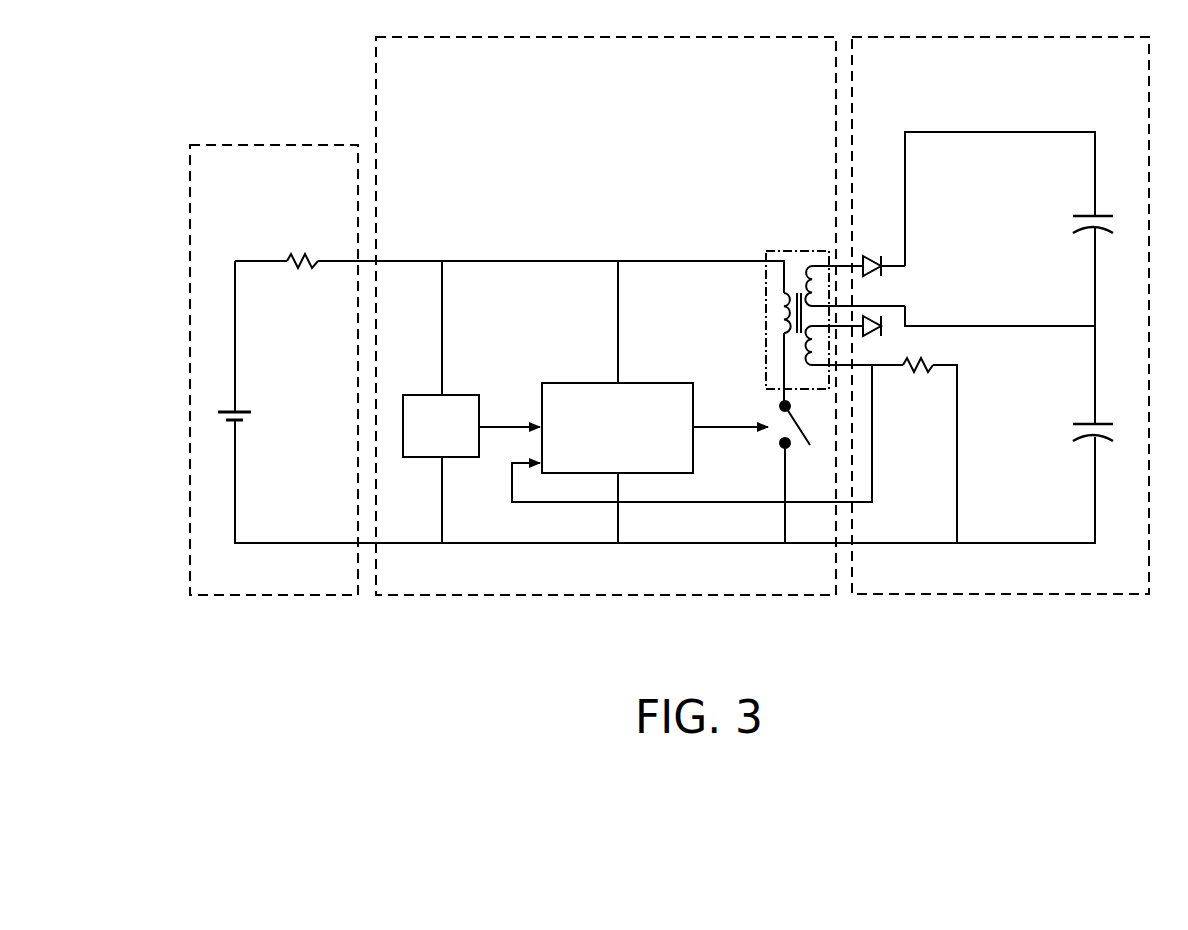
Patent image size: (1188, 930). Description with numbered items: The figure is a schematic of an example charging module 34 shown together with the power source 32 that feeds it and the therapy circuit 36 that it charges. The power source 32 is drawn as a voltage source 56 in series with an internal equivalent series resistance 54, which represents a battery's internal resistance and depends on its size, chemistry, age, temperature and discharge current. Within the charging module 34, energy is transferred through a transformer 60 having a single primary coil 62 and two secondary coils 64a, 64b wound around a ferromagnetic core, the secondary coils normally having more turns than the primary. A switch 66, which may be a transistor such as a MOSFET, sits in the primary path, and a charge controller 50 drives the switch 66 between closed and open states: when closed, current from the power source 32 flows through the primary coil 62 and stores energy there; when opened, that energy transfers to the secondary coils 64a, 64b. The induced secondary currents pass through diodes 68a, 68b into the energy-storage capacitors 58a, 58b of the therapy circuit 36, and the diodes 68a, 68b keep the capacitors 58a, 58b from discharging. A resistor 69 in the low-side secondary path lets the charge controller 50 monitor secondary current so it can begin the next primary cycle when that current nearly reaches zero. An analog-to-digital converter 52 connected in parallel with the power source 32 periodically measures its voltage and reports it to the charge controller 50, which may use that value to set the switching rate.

The power source 32 is at (262, 200).
The charging module 34 is at (620, 102).
The therapy circuit 36 is at (990, 107).
The charge controller 50 is at (606, 460).
The analog-to-digital converter (ADC) 52 is at (430, 446).
The internal equivalent series resistance 54 is at (305, 280).
The voltage source 56 is at (262, 418).
The capacitor 58a is at (1077, 206).
The capacitor 58b is at (1080, 448).
The transformer 60 is at (773, 250).
The primary coil 62 is at (780, 308).
The secondary coil 64a is at (818, 280).
The secondary coil 64b is at (824, 347).
The switch 66 is at (813, 424).
The diode 68a is at (879, 250).
The diode 68b is at (875, 311).
The resistor 69 is at (915, 380).